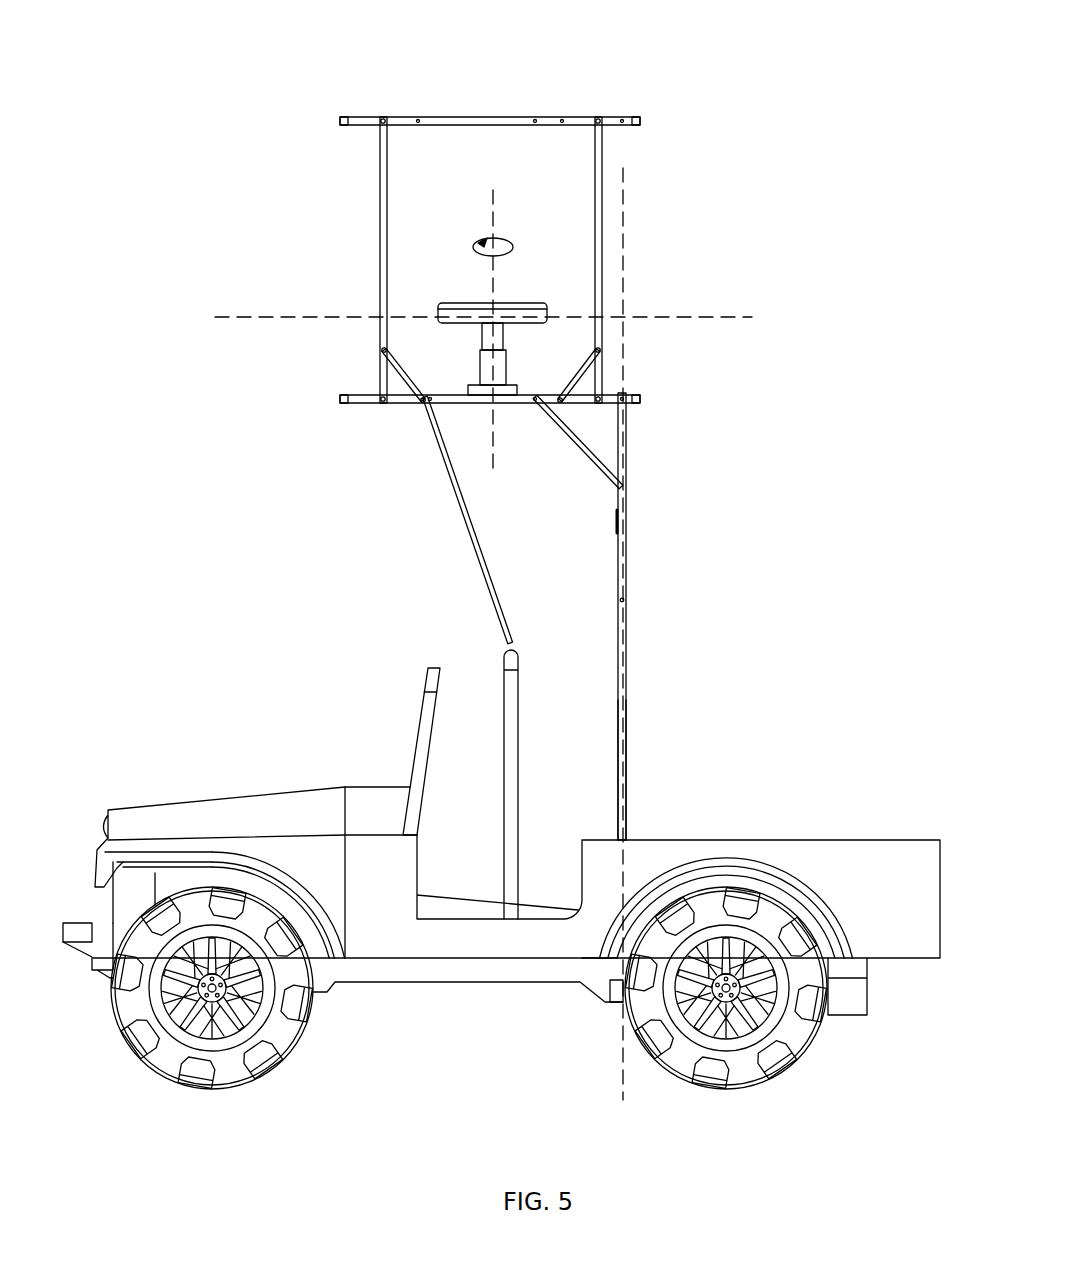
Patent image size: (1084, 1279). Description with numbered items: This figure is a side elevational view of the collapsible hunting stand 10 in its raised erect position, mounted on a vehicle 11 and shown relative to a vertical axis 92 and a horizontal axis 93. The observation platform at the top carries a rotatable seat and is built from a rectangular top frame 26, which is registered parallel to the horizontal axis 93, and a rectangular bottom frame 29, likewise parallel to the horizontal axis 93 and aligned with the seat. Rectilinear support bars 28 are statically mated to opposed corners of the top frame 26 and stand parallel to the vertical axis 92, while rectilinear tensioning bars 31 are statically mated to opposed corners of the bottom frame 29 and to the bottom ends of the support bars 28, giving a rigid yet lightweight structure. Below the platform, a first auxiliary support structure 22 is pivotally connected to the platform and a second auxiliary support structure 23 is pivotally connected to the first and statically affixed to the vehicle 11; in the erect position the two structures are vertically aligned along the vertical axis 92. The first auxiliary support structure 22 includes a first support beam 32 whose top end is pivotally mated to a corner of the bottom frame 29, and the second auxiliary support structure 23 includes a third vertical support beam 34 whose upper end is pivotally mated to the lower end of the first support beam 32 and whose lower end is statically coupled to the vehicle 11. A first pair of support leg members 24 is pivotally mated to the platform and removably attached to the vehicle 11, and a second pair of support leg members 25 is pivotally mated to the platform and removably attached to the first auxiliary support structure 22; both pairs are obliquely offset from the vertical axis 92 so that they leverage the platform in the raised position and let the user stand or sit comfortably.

The collapsible hunting stand 10 is at (472, 95).
The vehicle 11 is at (240, 808).
The first auxiliary support structure 22 is at (633, 443).
The second auxiliary support structure 23 is at (625, 663).
The first pair of support leg members 24 is at (467, 500).
The second pair of support leg members 25 is at (592, 449).
The top frame 26 is at (540, 118).
The support bars 28 is at (378, 145).
The bottom frame 29 is at (400, 402).
The tensioning bars 31 is at (397, 372).
The first support beam 32 is at (623, 497).
The third vertical support beam 34 is at (622, 748).
The vertical axis 92 is at (622, 275).
The horizontal axis 93 is at (712, 318).